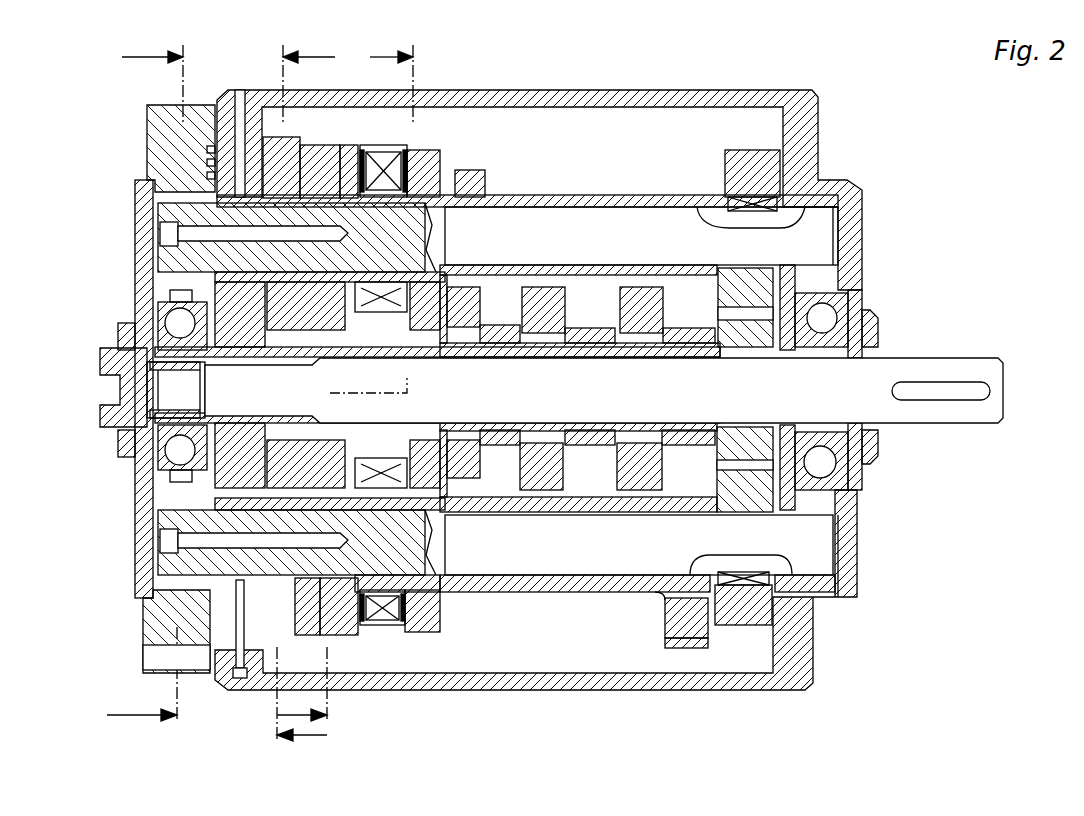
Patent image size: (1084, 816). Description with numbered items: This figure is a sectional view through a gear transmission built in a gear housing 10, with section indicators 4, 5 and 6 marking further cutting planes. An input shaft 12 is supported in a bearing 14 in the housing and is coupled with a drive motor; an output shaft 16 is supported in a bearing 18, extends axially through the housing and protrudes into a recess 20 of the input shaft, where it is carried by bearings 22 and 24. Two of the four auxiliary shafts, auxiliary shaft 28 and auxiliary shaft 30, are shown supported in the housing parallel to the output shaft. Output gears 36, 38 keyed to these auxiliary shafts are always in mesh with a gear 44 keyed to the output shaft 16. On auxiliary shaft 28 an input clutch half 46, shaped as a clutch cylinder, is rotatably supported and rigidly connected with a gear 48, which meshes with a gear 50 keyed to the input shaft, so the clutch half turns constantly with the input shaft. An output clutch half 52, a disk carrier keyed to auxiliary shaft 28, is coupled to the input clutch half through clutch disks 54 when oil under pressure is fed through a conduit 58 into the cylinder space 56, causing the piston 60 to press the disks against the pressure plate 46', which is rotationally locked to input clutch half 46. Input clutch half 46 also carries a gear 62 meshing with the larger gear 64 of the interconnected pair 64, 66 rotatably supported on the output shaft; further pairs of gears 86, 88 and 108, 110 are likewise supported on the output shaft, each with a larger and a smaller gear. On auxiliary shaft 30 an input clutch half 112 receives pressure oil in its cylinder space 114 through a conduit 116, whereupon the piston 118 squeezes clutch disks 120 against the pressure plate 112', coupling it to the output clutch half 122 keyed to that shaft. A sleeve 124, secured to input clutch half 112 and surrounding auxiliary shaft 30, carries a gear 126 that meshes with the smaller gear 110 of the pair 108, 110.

The section line 4- 4 is at (349, 382).
The section line 5- 5 is at (145, 375).
The section line 6- 6 is at (306, 398).
The gear housing 10 is at (765, 680).
The input shaft 12 is at (250, 430).
The bearing 14 is at (150, 322).
The output shaft 16 is at (880, 400).
The bearing 18 is at (828, 320).
The recess 20 is at (240, 420).
The bearing 22 is at (170, 384).
The bearing 24 is at (317, 407).
The auxiliary shaft 28 is at (790, 245).
The auxiliary shaft 30 is at (560, 585).
The output gear 36 is at (750, 178).
The output gear 38 is at (742, 605).
The gear 44 is at (755, 440).
The input clutch half 46 is at (181, 171).
The pressure plate 46' is at (527, 159).
The gear 48 is at (278, 290).
The gear 50 is at (275, 480).
The output clutch half 52 is at (377, 193).
The clutch disks 54 is at (386, 190).
The cylinder space 56 is at (345, 182).
The conduit 58 is at (235, 238).
The piston 60 is at (330, 173).
The gear 62 is at (465, 182).
The gear 64 is at (462, 318).
The gear 66 is at (500, 345).
The gear 86 is at (540, 310).
The gear 88 is at (592, 338).
The gear 108 is at (645, 308).
The gear 110 is at (685, 340).
The input clutch half 112 is at (160, 606).
The pressure plate 112' is at (444, 671).
The cylinder space 114 is at (220, 665).
The conduit 116 is at (235, 540).
The piston 118 is at (350, 600).
The clutch disks 120 is at (383, 612).
The output clutch half 122 is at (440, 603).
The sleeve 124 is at (615, 583).
The gear 126 is at (683, 625).